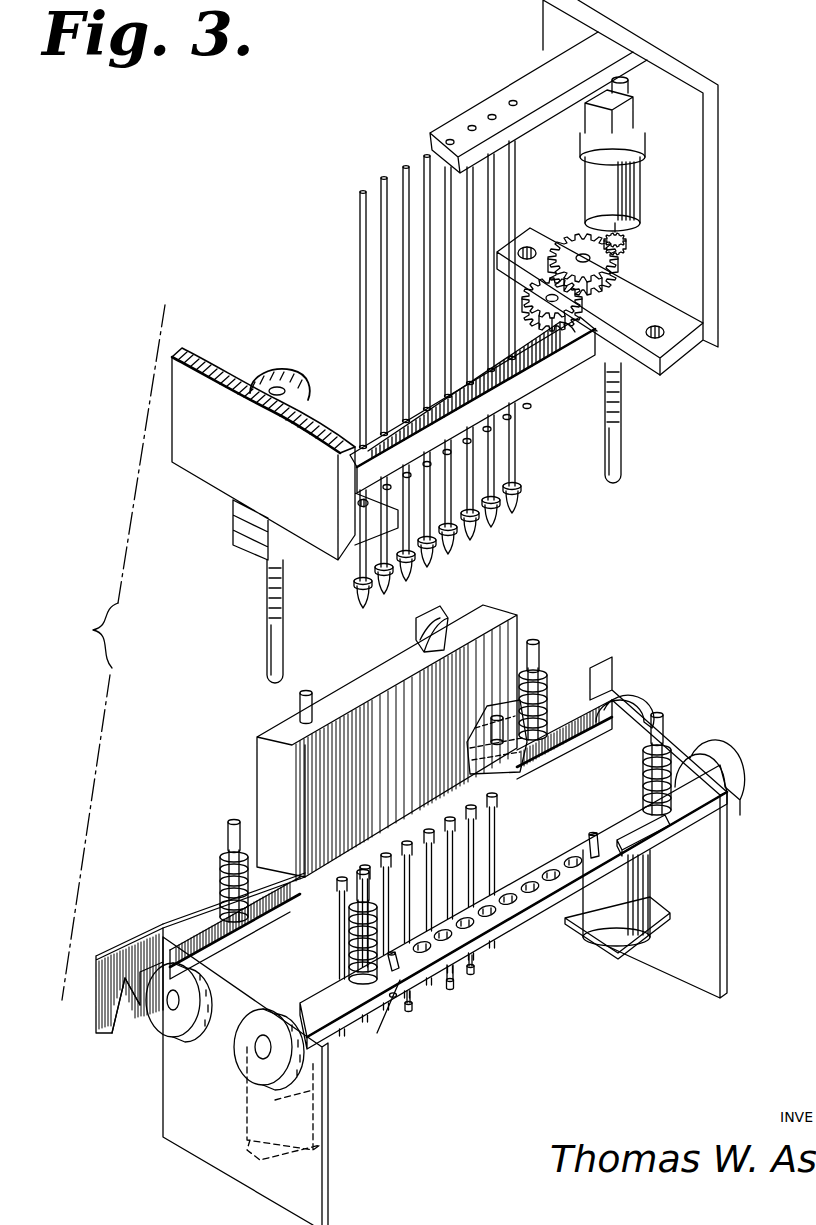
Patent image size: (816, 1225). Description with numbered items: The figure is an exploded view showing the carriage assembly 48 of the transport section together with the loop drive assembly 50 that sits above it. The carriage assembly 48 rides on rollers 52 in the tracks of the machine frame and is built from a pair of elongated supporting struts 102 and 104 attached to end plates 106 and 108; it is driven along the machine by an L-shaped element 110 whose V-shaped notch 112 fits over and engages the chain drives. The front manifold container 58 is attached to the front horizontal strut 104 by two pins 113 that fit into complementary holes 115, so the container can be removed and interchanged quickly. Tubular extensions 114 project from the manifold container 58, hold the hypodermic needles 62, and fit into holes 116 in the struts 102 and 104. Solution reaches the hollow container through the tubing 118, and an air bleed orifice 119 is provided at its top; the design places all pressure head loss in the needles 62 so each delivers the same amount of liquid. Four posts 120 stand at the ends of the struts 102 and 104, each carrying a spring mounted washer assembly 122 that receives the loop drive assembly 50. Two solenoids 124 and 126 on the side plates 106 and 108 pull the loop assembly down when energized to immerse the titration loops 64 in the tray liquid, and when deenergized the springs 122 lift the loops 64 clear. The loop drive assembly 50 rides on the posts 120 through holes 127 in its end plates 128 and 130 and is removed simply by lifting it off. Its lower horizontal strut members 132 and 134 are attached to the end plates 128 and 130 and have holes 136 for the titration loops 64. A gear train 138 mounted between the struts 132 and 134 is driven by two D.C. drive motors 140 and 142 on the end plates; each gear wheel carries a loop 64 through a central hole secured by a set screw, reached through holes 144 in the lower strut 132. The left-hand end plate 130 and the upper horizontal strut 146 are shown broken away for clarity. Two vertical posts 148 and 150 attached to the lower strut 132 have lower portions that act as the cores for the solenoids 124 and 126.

The carriage assembly 48 is at (479, 1026).
The loop drive assembly 50 is at (281, 224).
The rollers 52 is at (700, 745).
The front manifold container 58 is at (520, 626).
The hypodermic needles 62 is at (482, 875).
The titration loops 64 is at (383, 176).
The rear horizontal strut 102 is at (517, 928).
The front horizontal strut 104 is at (256, 918).
The end plate 106 is at (718, 880).
The end plate 108 is at (172, 1106).
The L-shaped element 110 is at (145, 950).
The V-shaped notch 112 is at (120, 1022).
The pins 113 is at (391, 972).
The tubular extensions 114 is at (492, 808).
The holes 115 is at (470, 720).
The holes 116 is at (452, 988).
The tubing 118 is at (445, 618).
The air bleed orifice 119 is at (300, 706).
The posts 120 is at (232, 826).
The spring mounted washer assembly 122 is at (225, 872).
The solenoid 124 is at (612, 935).
The solenoid 126 is at (305, 1100).
The holes 127 is at (528, 248).
The end plate 128 is at (704, 236).
The left-hand end plate 130 is at (212, 458).
The lower horizontal strut member 132 is at (547, 397).
The lower horizontal strut member 134 is at (568, 352).
The holes 136 is at (366, 434).
The gear train 138 is at (500, 415).
The D.C. drive motor 140 is at (620, 180).
The D.C. drive motor 142 is at (276, 373).
The holes 144 is at (477, 435).
The upper horizontal strut 146 is at (468, 115).
The vertical post 148 is at (622, 440).
The vertical post 150 is at (284, 632).